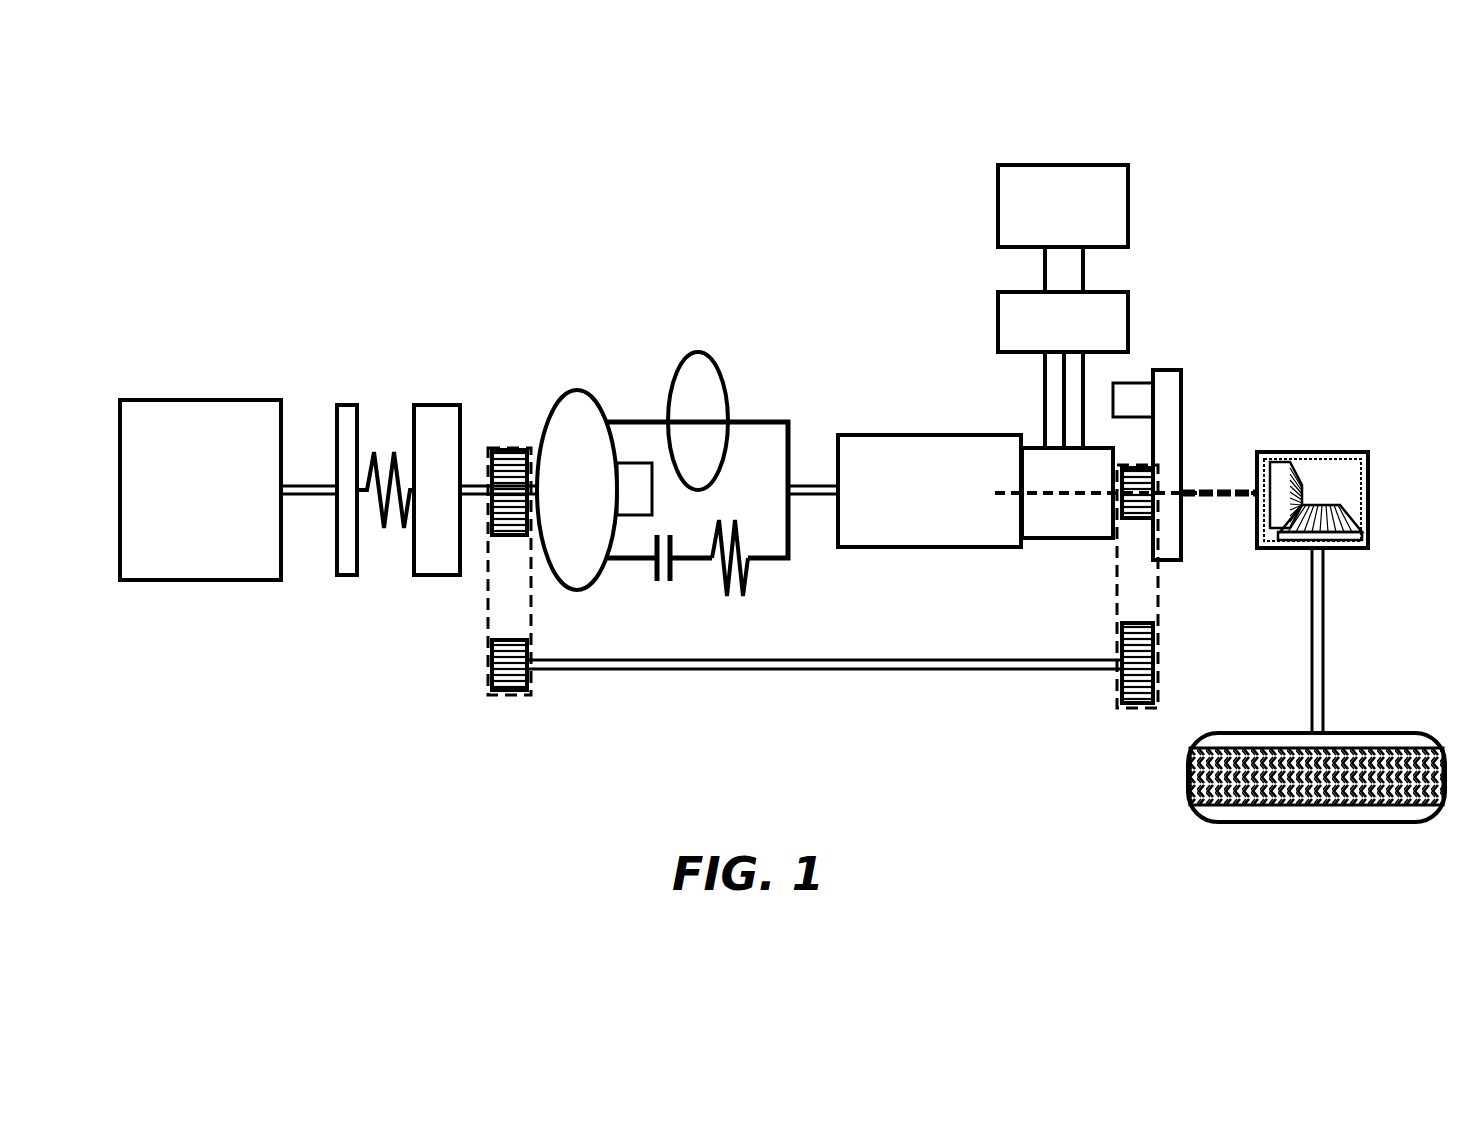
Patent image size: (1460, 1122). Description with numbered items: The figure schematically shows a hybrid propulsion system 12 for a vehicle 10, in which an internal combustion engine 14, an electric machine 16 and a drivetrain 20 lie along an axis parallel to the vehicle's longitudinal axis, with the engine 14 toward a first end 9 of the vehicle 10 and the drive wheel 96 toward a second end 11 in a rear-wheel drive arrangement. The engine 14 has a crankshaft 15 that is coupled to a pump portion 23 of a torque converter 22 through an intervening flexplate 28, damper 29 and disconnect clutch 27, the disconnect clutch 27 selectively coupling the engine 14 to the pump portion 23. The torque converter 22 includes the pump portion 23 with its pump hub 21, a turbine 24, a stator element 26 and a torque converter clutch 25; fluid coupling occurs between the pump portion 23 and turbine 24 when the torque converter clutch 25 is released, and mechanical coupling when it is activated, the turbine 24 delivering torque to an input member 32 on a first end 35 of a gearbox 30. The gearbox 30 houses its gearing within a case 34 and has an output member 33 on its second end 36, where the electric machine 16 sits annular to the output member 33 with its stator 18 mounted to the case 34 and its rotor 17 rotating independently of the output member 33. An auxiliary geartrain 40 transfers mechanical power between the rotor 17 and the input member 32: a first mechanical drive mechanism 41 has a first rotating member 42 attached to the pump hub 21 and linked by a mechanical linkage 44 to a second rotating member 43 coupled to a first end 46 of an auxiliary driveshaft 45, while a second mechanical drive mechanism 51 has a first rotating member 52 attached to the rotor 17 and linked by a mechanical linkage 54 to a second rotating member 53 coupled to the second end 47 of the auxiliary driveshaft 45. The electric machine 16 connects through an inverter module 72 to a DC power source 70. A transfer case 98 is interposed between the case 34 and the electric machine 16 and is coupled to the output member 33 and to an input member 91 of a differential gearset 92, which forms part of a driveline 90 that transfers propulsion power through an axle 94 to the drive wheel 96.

The first end 9 is at (137, 325).
The vehicle 10 is at (703, 270).
The second end 11 is at (1318, 268).
The hybrid propulsion system 12 is at (520, 318).
The internal combustion engine 14 is at (200, 490).
The crankshaft 15 is at (312, 482).
The electric machine 16 is at (1093, 447).
The rotor 17 is at (1153, 470).
The stator 18 is at (1115, 455).
The drivetrain 20 is at (738, 383).
The pump hub 21 is at (505, 485).
The torque converter 22 is at (624, 400).
The pump portion 23 is at (594, 490).
The turbine 24 is at (698, 421).
The torque converter clutch 25 is at (655, 578).
The stator element 26 is at (722, 578).
The disconnect clutch 27 is at (437, 405).
The flexplate 28 is at (345, 405).
The damper 29 is at (383, 445).
The gearbox 30 is at (929, 491).
The input member 32 is at (818, 500).
The output member 33 is at (1080, 510).
The case 34 is at (912, 435).
The first end 35 is at (838, 440).
The second end 36 is at (1018, 435).
The auxiliary geartrain 40 is at (855, 732).
The first mechanical drive mechanism 41 is at (485, 625).
The first rotating member 42 is at (490, 508).
The second rotating member 43 is at (490, 665).
The mechanical linkage 44 is at (488, 600).
The auxiliary driveshaft 45 is at (842, 672).
The first end 46 is at (512, 710).
The second end 47 is at (1128, 718).
The second mechanical drive mechanism 51 is at (1162, 615).
The first rotating member 52 is at (1145, 518).
The second rotating member 53 is at (1150, 668).
The mechanical linkage 54 is at (1160, 585).
The DC power source 70 is at (1063, 206).
The inverter module 72 is at (1063, 322).
The driveline 90 is at (1358, 474).
The input member 91 is at (1190, 500).
The differential gearset 92 is at (1333, 462).
The axle 94 is at (1325, 605).
The drive wheel 96 is at (1195, 812).
The transfer case 98 is at (1181, 378).